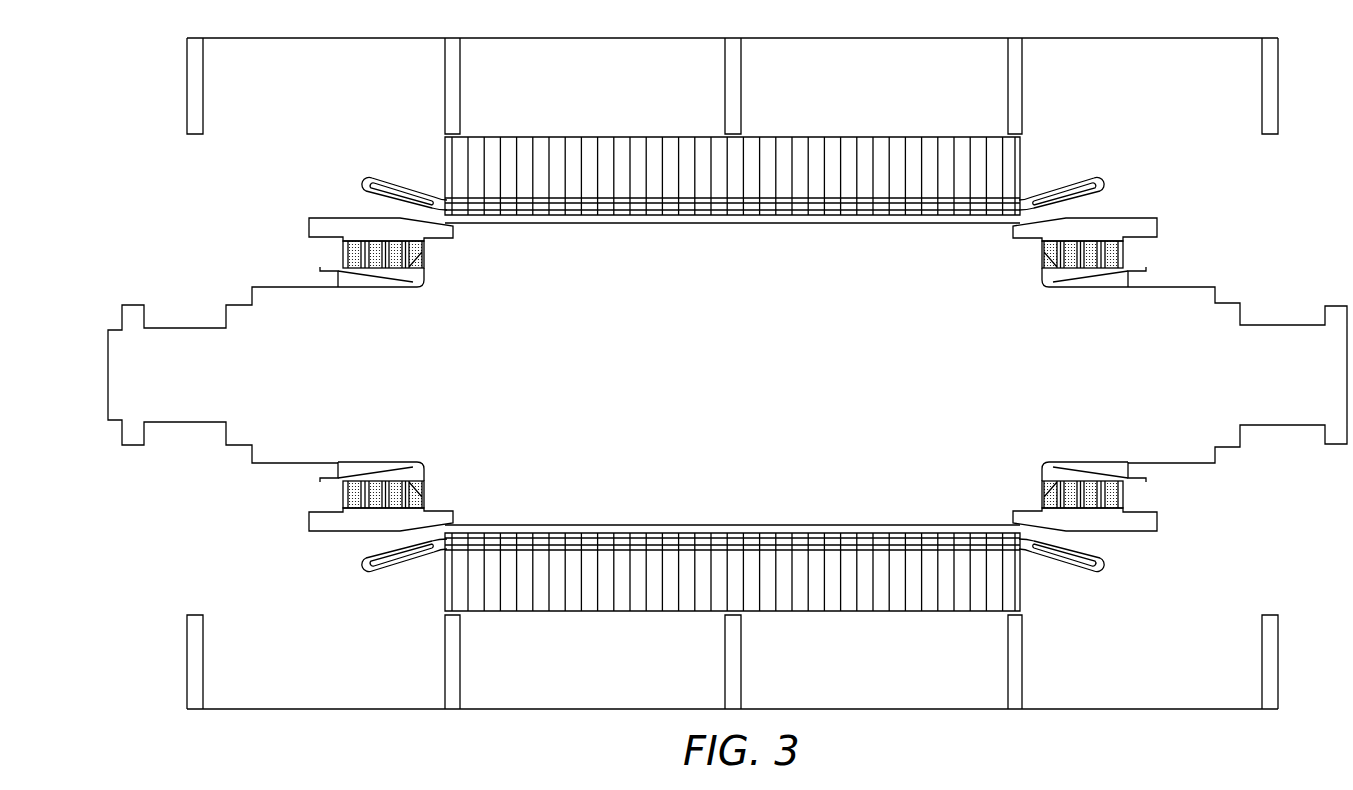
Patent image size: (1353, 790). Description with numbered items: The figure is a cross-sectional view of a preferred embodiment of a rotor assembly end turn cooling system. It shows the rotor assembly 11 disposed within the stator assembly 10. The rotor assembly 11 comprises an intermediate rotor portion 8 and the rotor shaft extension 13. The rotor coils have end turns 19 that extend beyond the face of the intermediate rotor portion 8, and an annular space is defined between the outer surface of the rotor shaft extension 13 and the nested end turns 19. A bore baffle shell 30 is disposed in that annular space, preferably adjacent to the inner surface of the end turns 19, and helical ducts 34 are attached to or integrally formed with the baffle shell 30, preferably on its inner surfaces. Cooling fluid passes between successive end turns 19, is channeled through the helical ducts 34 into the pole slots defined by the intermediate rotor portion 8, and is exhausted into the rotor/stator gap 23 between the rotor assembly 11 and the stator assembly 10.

The intermediate rotor portion 8 is at (606, 268).
The stator assembly 10 is at (836, 170).
The rotor assembly 11 is at (1216, 254).
The rotor shaft extension 13 is at (265, 287).
The end turn 19 is at (373, 240).
The rotor/stator gap 23 is at (362, 548).
The bore baffle shell 30 is at (332, 282).
The helical duct 34 is at (397, 288).